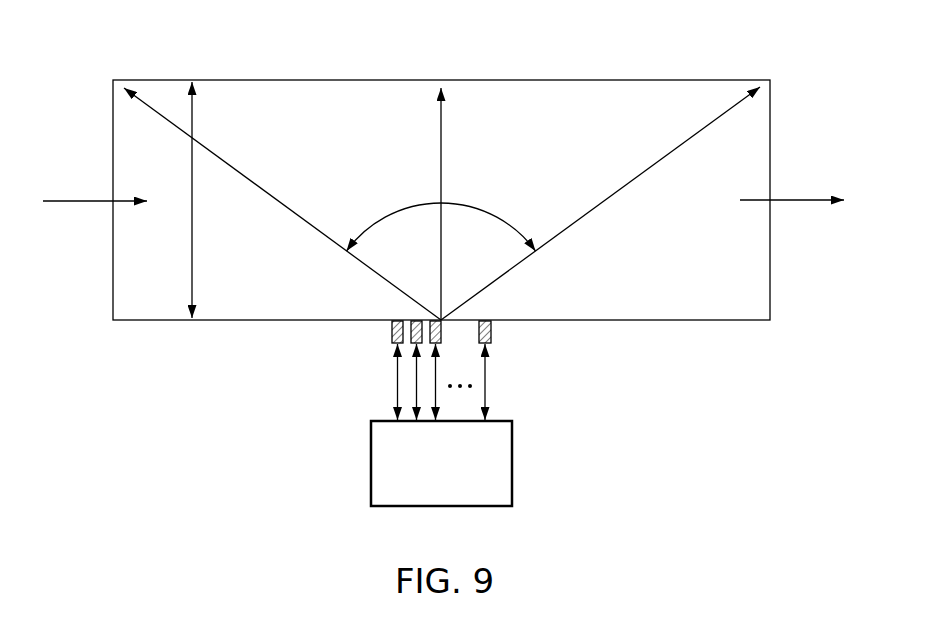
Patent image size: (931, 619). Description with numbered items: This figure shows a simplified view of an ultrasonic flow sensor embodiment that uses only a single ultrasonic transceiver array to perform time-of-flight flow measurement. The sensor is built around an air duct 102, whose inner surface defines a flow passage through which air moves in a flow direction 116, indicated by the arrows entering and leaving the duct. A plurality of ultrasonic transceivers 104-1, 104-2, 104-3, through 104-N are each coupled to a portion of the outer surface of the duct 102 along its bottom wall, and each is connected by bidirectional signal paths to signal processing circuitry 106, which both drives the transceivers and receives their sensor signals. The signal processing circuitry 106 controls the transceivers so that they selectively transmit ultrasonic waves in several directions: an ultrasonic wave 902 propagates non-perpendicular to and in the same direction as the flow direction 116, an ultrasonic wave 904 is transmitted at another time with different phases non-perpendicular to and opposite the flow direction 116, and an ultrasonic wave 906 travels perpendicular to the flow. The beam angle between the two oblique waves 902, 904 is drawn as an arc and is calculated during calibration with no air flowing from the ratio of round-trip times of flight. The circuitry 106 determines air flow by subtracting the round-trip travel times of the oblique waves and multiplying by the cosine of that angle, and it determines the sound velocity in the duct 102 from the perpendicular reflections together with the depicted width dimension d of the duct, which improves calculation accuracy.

The air duct 102 is at (577, 77).
The ultrasonic transceiver 104-1 is at (391, 336).
The ultrasonic transceiver 104-2 is at (410, 321).
The ultrasonic transceiver 104-3 is at (444, 323).
The ultrasonic transceiver 104-N is at (492, 336).
The signal processing circuitry 106 is at (512, 462).
The flow direction 116 is at (70, 200).
The ultrasonic wave 902 is at (650, 167).
The ultrasonic wave 904 is at (235, 168).
The ultrasonic wave 906 is at (443, 128).
The width dimension d is at (193, 236).